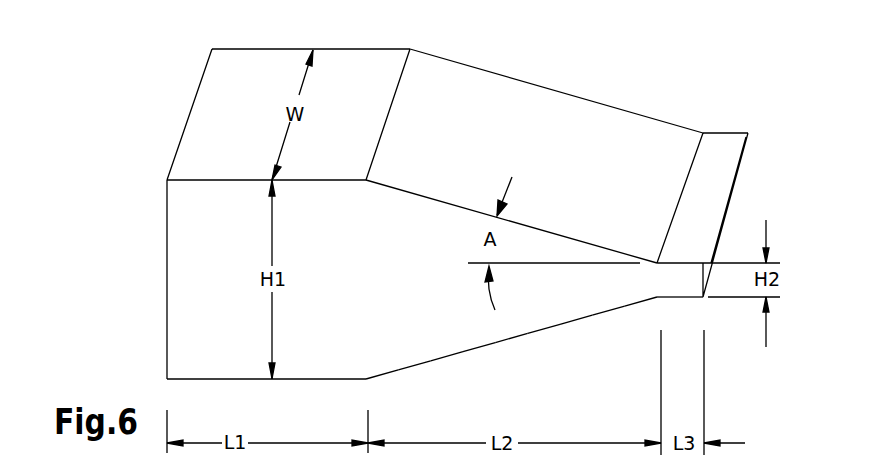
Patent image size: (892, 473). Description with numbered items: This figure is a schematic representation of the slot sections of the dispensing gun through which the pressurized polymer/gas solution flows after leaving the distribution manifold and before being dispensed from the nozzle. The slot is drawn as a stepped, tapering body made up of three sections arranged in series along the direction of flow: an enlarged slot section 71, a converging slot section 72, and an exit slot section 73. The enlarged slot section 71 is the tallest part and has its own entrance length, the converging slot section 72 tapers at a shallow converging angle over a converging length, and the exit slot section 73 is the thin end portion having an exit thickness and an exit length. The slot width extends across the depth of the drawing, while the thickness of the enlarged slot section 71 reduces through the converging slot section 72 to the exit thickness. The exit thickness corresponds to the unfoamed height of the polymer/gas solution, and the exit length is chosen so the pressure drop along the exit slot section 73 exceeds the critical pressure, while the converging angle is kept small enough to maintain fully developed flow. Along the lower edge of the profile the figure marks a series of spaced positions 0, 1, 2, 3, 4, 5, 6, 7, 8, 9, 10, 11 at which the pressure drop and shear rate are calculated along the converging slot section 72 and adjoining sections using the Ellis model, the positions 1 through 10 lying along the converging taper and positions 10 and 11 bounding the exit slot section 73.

The enlarged slot section 71 is at (273, 57).
The converging slot section 72 is at (510, 98).
The exit slot section 73 is at (722, 145).
The profile reference point 0 is at (266, 396).
The profile reference point 1 is at (382, 384).
The profile reference point 2 is at (414, 375).
The profile reference point 3 is at (447, 367).
The profile reference point 4 is at (479, 358).
The profile reference point 5 is at (510, 349).
The profile reference point 6 is at (540, 340).
The profile reference point 7 is at (571, 331).
The profile reference point 8 is at (602, 323).
The profile reference point 9 is at (632, 314).
The profile reference point 10 is at (659, 310).
The profile reference point 11 is at (690, 309).